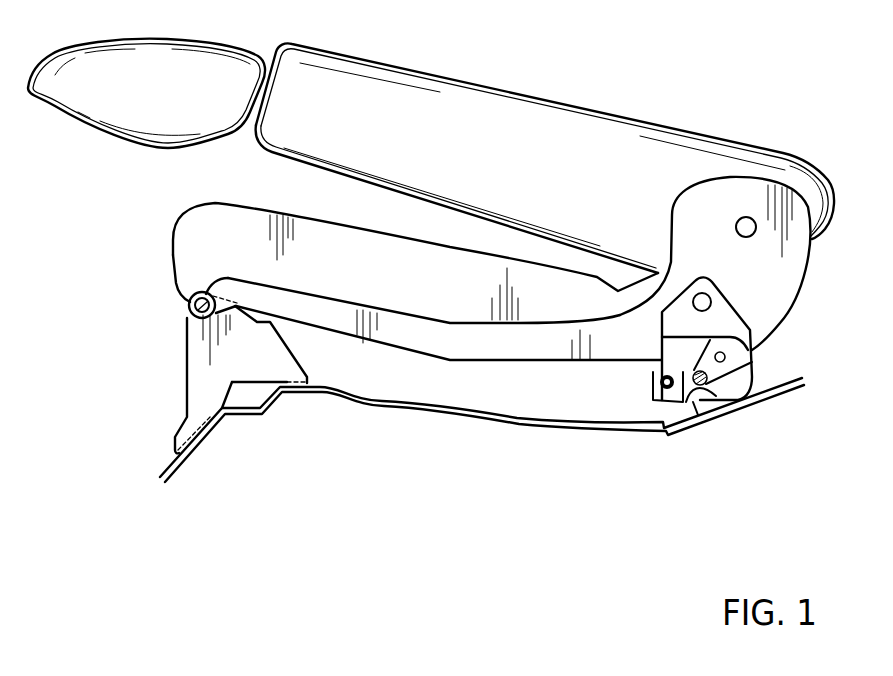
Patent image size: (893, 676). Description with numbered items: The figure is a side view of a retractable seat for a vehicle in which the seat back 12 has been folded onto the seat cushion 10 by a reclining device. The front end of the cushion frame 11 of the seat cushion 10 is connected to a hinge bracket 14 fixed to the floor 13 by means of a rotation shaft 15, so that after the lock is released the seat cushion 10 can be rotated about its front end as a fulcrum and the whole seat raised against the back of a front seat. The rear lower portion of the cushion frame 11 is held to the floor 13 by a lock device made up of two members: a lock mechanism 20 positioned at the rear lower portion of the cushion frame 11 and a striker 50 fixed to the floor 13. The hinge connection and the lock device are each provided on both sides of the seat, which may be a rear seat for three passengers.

The seat cushion 10 is at (385, 258).
The cushion frame 11 is at (497, 350).
The seat back 12 is at (617, 140).
The floor 13 is at (587, 427).
The hinge bracket 14 is at (208, 388).
The rotation shaft 15 is at (188, 315).
The lock mechanism 20 is at (758, 320).
The striker 50 is at (690, 402).